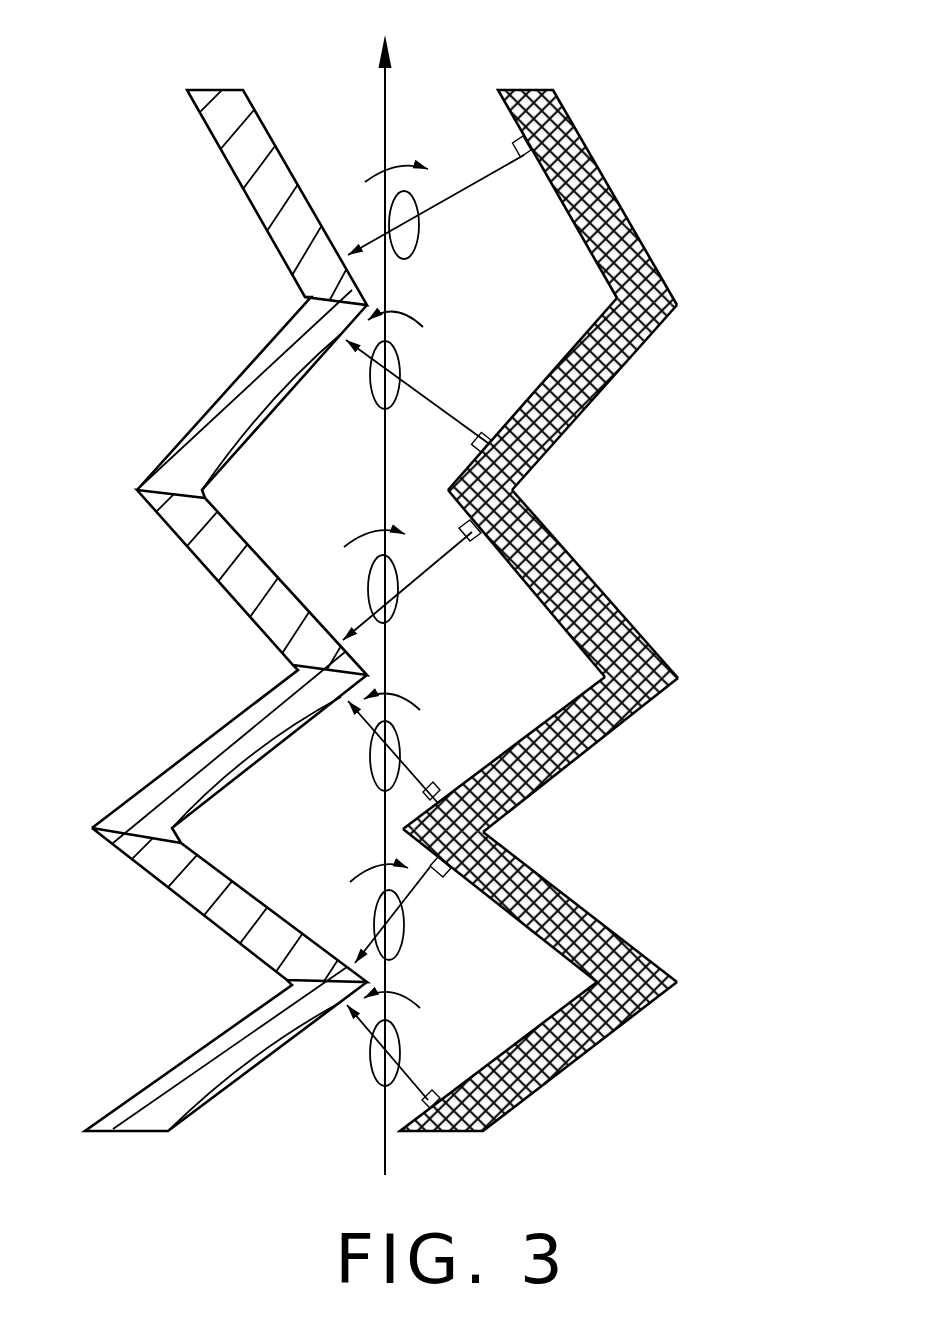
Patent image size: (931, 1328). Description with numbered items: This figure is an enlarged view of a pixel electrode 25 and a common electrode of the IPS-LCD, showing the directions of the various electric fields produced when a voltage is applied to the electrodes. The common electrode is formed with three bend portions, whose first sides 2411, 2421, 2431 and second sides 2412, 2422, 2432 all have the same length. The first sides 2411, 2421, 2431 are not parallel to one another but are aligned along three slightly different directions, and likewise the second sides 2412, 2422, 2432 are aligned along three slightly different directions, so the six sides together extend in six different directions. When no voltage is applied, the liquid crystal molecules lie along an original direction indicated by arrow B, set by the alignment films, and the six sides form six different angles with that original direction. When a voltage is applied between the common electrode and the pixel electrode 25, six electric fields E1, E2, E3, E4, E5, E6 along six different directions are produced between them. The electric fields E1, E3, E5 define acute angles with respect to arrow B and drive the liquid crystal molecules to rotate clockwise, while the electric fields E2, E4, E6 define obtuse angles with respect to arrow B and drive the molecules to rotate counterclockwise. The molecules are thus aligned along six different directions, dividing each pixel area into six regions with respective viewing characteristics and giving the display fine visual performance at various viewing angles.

The pixel electrode 25 is at (273, 378).
The first side of first bend portion 2411 is at (612, 210).
The second side of first bend portion 2412 is at (630, 337).
The first side of second bend portion 2421 is at (603, 597).
The second side of second bend portion 2422 is at (603, 728).
The first side of third bend portion 2431 is at (613, 940).
The second side of third bend portion 2432 is at (607, 1030).
The electric field E1 is at (438, 207).
The electric field E2 is at (423, 396).
The electric field E3 is at (410, 585).
The electric field E4 is at (414, 773).
The electric field E5 is at (414, 887).
The electric field E6 is at (413, 1083).
The arrow B is at (401, 596).